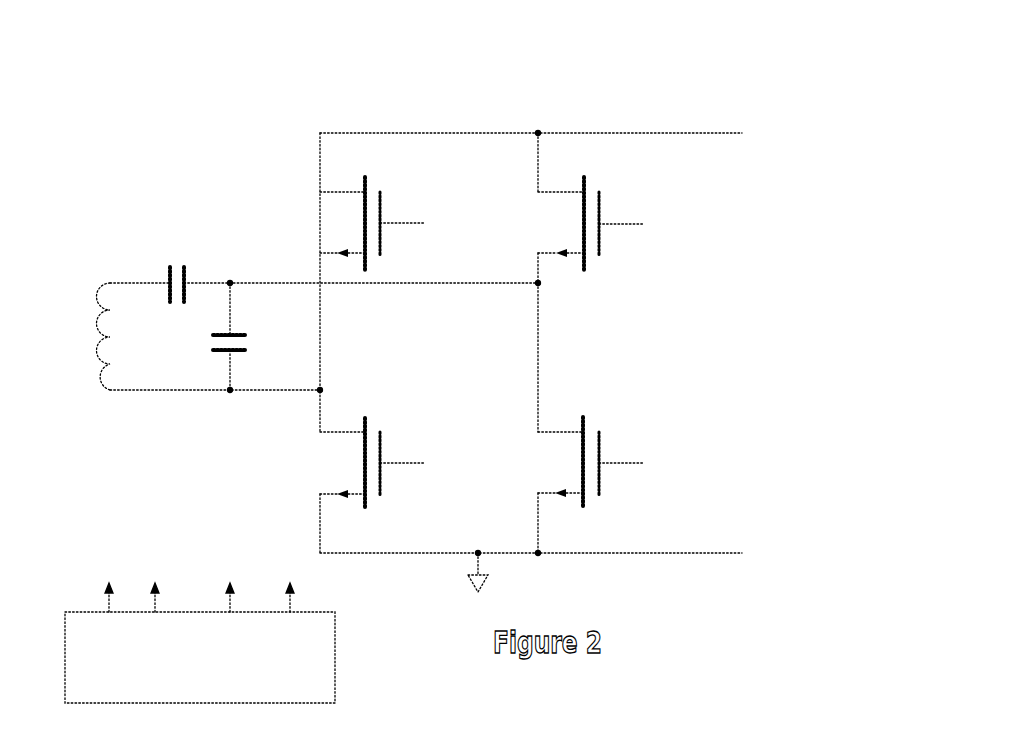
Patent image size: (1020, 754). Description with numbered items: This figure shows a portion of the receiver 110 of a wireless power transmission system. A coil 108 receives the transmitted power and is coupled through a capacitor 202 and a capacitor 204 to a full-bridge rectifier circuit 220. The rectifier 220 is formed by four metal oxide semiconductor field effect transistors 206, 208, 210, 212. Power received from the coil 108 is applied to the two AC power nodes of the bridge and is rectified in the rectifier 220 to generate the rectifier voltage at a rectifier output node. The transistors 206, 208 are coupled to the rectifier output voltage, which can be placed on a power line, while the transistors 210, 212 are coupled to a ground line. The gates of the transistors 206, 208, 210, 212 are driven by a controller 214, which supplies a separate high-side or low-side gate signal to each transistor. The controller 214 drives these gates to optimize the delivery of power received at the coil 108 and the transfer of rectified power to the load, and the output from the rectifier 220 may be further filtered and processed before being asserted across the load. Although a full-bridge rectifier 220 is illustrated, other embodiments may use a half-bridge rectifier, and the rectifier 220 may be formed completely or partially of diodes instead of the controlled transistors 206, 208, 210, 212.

The receiver 110 is at (158, 92).
The coil 108 is at (88, 319).
The capacitor 202 is at (168, 268).
The capacitor 204 is at (213, 348).
The metal oxide semiconductor field effect transistor 206 is at (395, 192).
The metal oxide semiconductor field effect transistor 208 is at (586, 183).
The metal oxide semiconductor field effect transistor 210 is at (380, 432).
The metal oxide semiconductor field effect transistor 212 is at (582, 430).
The controller 214 is at (123, 694).
The full-bridge rectifier circuit 220 is at (508, 371).